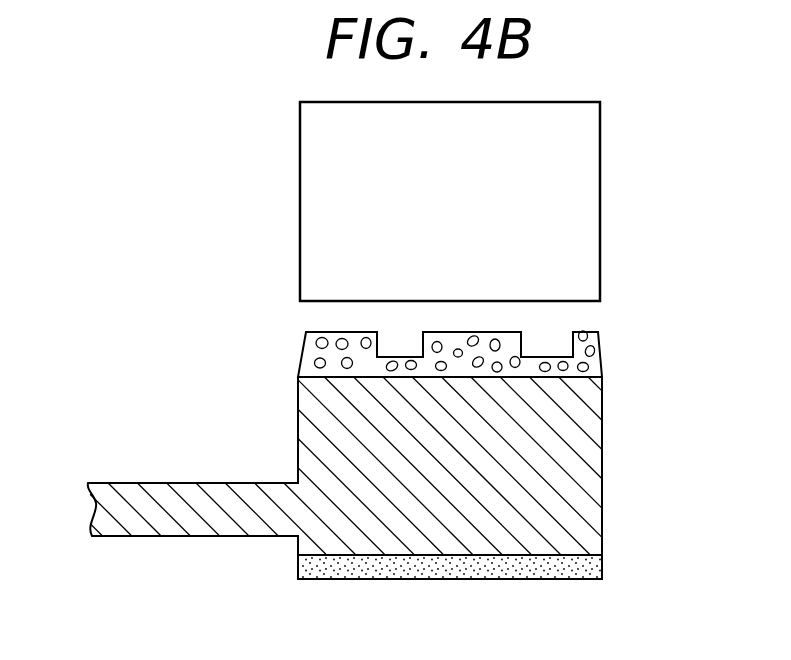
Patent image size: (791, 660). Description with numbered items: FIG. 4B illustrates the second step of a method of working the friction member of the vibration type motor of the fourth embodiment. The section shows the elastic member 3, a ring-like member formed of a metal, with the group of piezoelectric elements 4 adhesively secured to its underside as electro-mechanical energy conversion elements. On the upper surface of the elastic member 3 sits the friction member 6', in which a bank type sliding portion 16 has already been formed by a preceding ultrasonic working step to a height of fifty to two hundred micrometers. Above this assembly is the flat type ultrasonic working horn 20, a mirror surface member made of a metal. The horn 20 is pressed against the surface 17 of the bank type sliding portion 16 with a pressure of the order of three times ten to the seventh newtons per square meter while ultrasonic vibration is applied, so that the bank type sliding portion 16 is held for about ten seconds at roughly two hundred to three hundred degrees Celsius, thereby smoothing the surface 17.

The flat type ultrasonic working horn 20 is at (585, 203).
The surface 17 is at (437, 332).
The bank type sliding portion 16 is at (508, 344).
The friction member 6' is at (493, 361).
The elastic member 3 is at (593, 452).
The group of piezoelectric elements 4 is at (605, 565).